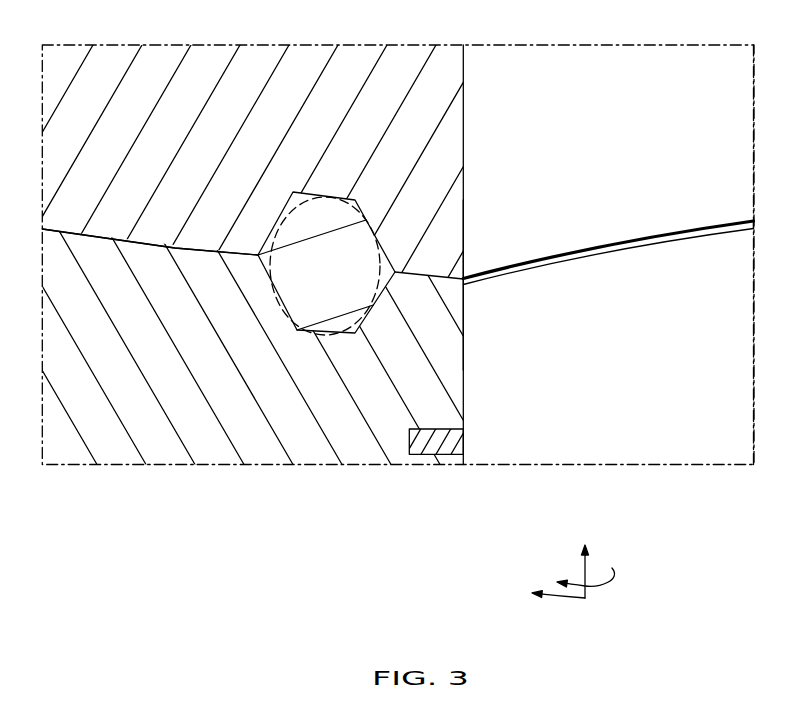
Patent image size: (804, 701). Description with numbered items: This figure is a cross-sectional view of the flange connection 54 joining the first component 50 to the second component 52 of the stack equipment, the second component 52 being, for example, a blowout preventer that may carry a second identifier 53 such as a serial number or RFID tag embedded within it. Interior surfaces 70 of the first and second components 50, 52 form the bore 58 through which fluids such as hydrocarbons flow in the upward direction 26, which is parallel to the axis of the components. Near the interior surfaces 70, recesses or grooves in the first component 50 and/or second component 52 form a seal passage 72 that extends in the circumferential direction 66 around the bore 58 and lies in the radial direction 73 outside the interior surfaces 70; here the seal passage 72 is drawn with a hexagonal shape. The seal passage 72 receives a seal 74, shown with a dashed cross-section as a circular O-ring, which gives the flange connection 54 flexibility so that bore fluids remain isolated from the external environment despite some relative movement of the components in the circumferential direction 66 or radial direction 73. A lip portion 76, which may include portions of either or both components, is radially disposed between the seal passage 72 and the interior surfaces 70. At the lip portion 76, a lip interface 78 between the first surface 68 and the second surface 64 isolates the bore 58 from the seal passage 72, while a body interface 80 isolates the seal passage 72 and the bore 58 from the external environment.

The upward direction 26 is at (587, 568).
The first component 50 is at (99, 110).
The second component 52 is at (118, 452).
The second identifier 53 is at (409, 443).
The flange connection 54 is at (38, 227).
The bore 58 is at (662, 449).
The second surface 64 is at (687, 246).
The circumferential direction 66 is at (607, 588).
The first surface 68 is at (679, 226).
The interior surfaces 70 is at (460, 66).
The seal passage 72 is at (359, 337).
The radial direction 73 is at (563, 598).
The seal 74 is at (270, 227).
The lip portion 76 is at (448, 221).
The lip interface 78 is at (417, 282).
The body interface 80 is at (146, 251).